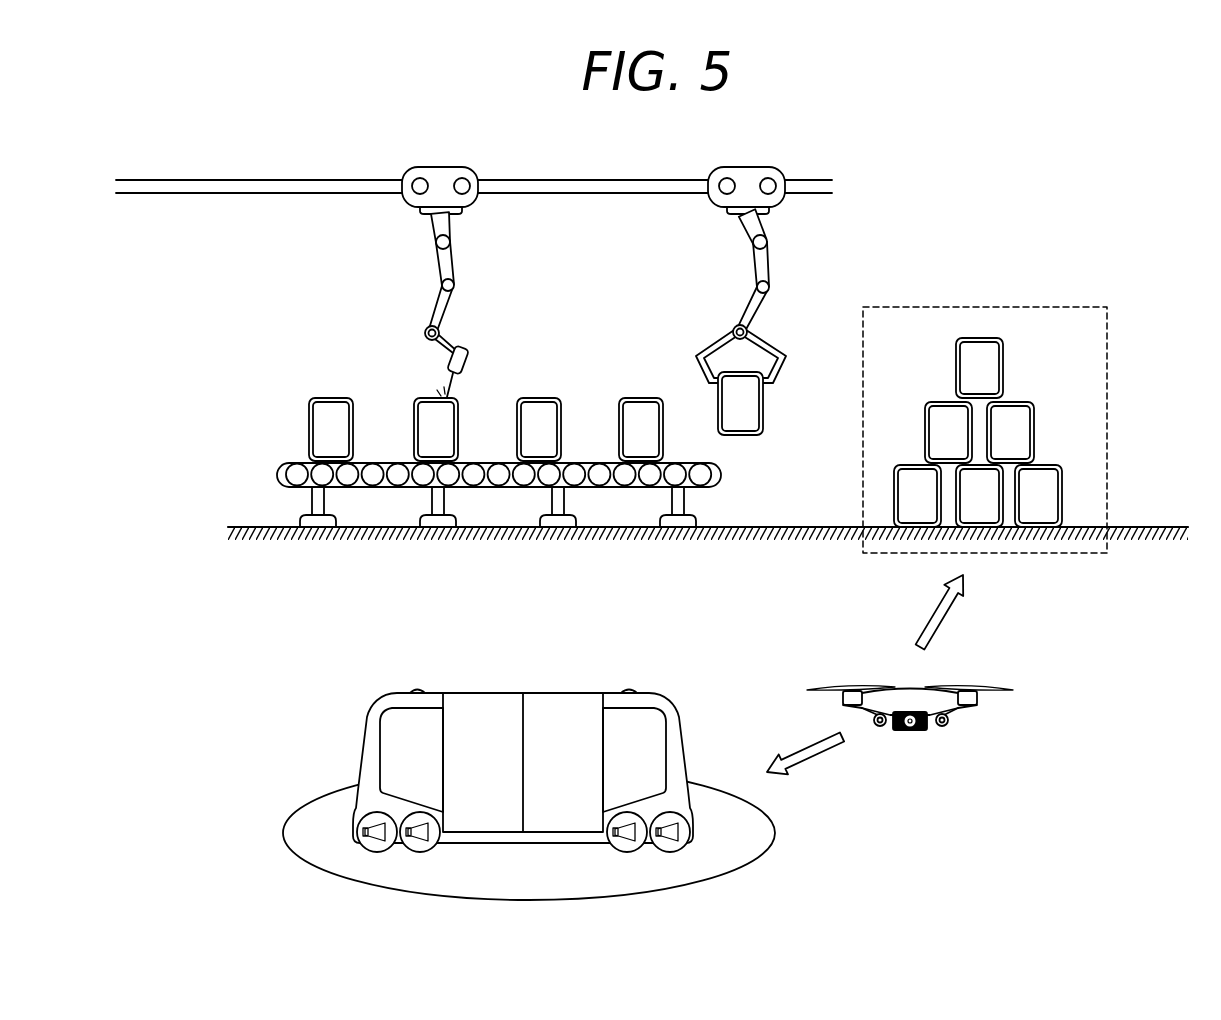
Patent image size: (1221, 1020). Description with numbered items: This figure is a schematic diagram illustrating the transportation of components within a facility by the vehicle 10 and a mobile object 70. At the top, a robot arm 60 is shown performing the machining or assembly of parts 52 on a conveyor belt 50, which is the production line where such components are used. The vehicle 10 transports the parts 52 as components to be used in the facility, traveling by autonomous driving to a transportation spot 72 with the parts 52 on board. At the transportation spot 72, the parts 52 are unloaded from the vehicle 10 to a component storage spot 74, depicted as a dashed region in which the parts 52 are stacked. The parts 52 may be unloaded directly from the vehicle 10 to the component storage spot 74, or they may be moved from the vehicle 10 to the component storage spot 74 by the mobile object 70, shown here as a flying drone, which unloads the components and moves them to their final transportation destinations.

The vehicle 10 is at (480, 693).
The conveyor belt 50 is at (721, 474).
The parts 52 is at (539, 398).
The robot arm 60 is at (452, 267).
The mobile object 70 is at (960, 712).
The transportation spot 72 is at (539, 888).
The component storage spot 74 is at (987, 307).